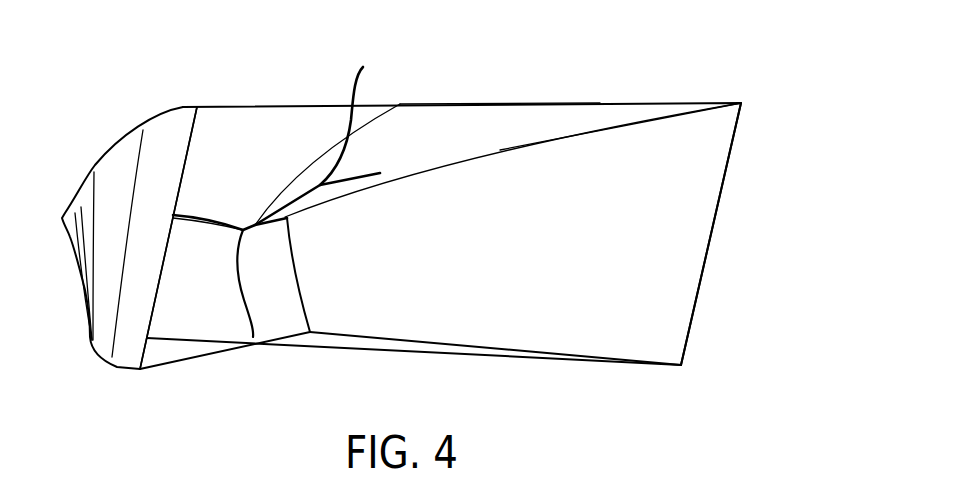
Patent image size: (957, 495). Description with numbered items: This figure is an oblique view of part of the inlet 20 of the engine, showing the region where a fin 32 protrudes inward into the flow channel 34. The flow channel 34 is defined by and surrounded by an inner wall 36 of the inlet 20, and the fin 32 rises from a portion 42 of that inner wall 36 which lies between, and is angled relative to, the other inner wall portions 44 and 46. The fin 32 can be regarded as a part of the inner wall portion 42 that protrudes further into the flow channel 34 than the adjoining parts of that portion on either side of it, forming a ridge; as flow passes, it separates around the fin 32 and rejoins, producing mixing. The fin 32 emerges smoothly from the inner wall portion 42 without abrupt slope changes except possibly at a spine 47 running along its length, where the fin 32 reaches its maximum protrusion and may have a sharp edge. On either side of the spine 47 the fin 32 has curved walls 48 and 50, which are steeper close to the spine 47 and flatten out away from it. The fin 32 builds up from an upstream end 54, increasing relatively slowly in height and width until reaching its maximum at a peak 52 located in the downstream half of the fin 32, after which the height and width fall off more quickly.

The inlet 20 is at (132, 80).
The fin 32 is at (285, 177).
The flow channel 34 is at (288, 305).
The inner wall 36 is at (558, 122).
The portion of the inner wall 42 is at (497, 127).
The portion of the inner wall 44 is at (660, 273).
The portion of the inner wall 46 is at (163, 263).
The spine 47 is at (363, 67).
The curved wall 48 is at (363, 167).
The curved wall 50 is at (257, 200).
The peak 52 is at (253, 337).
The upstream end 54 is at (327, 180).